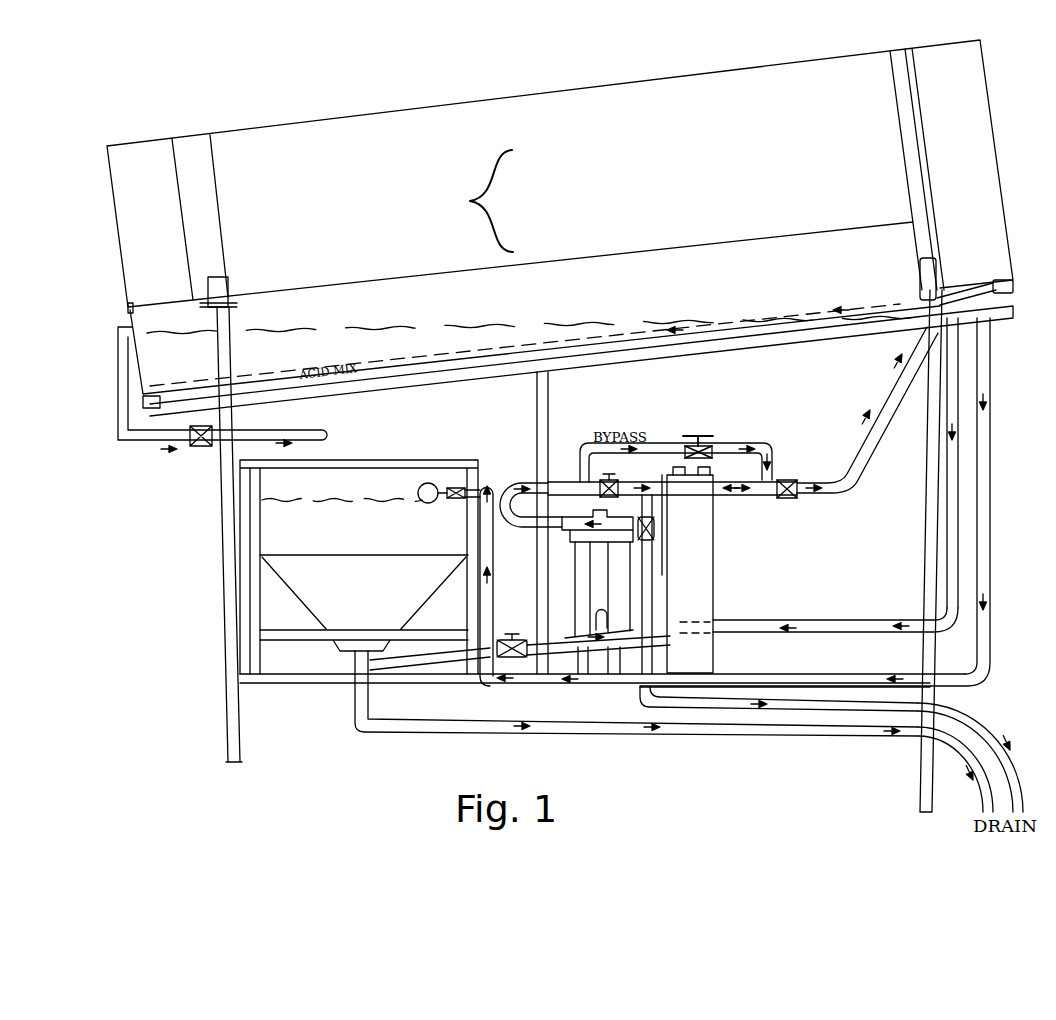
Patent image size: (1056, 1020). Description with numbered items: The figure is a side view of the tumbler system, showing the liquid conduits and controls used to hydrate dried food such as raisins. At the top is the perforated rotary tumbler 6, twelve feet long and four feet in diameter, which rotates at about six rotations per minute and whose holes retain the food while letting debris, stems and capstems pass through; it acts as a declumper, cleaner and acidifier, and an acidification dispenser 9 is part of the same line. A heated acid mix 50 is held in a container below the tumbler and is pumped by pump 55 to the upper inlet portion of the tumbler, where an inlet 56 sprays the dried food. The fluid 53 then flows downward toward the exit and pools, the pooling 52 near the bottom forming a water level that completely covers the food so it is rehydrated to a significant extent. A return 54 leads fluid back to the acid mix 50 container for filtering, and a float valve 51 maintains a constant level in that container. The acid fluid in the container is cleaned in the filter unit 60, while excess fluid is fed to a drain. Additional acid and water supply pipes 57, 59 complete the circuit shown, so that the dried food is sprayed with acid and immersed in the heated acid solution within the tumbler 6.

The tumbler 6 is at (560, 173).
The acidification dispenser 9 is at (825, 553).
The acid mix 50 is at (360, 567).
The float valve 51 is at (493, 538).
The pooling 52 is at (531, 321).
The fluid 53 is at (581, 358).
The return 54 is at (318, 427).
The pump 55 is at (592, 592).
The inlet 56 is at (836, 466).
The acid solution inlet pipes 57 is at (990, 433).
The filter return elbow pipe 59 is at (930, 626).
The filter unit 60 is at (687, 570).